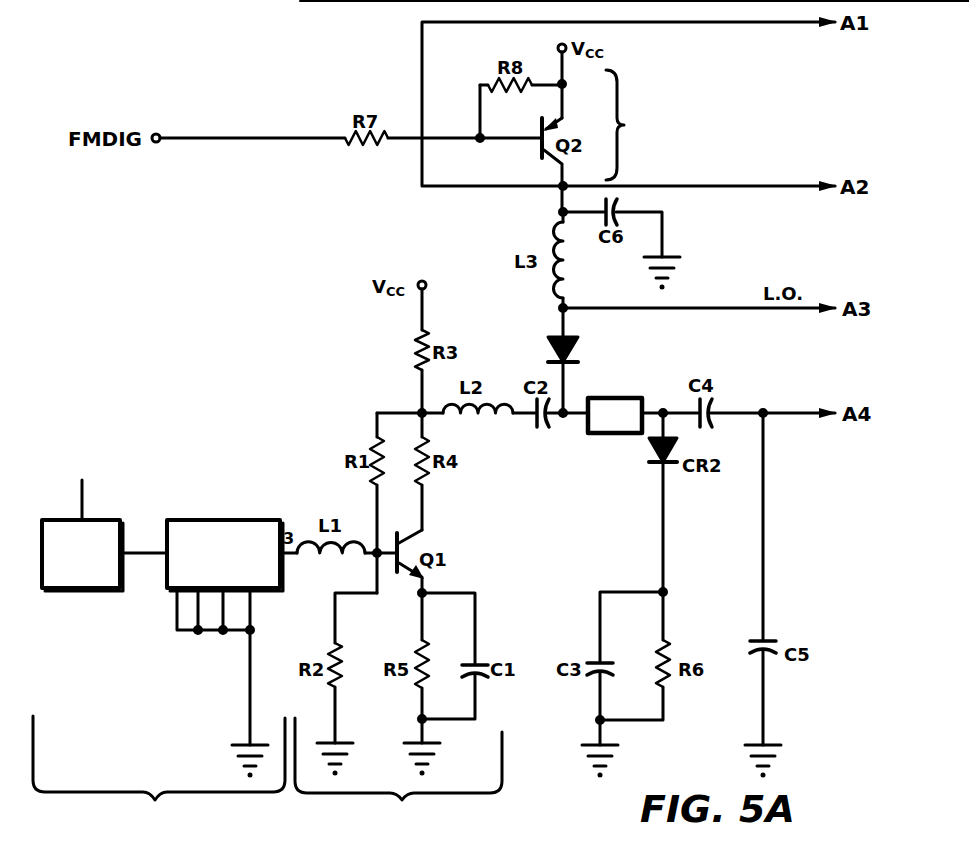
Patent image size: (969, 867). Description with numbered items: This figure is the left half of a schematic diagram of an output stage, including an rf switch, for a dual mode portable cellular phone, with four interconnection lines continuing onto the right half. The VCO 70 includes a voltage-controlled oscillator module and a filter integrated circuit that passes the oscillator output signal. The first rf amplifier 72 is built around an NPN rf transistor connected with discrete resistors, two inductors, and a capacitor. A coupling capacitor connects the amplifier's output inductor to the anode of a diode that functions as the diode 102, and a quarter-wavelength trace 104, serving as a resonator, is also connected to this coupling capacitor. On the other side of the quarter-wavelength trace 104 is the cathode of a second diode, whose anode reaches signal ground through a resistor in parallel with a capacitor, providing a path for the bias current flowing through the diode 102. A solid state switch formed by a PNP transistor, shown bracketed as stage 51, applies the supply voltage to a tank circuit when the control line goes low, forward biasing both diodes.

The FM digital modulator transistor stage 51 is at (631, 125).
The VCO 70 is at (159, 658).
The first rf amplifier 72 is at (398, 777).
The diode 102 is at (553, 365).
The quarter-wavelength trace 104 is at (613, 398).